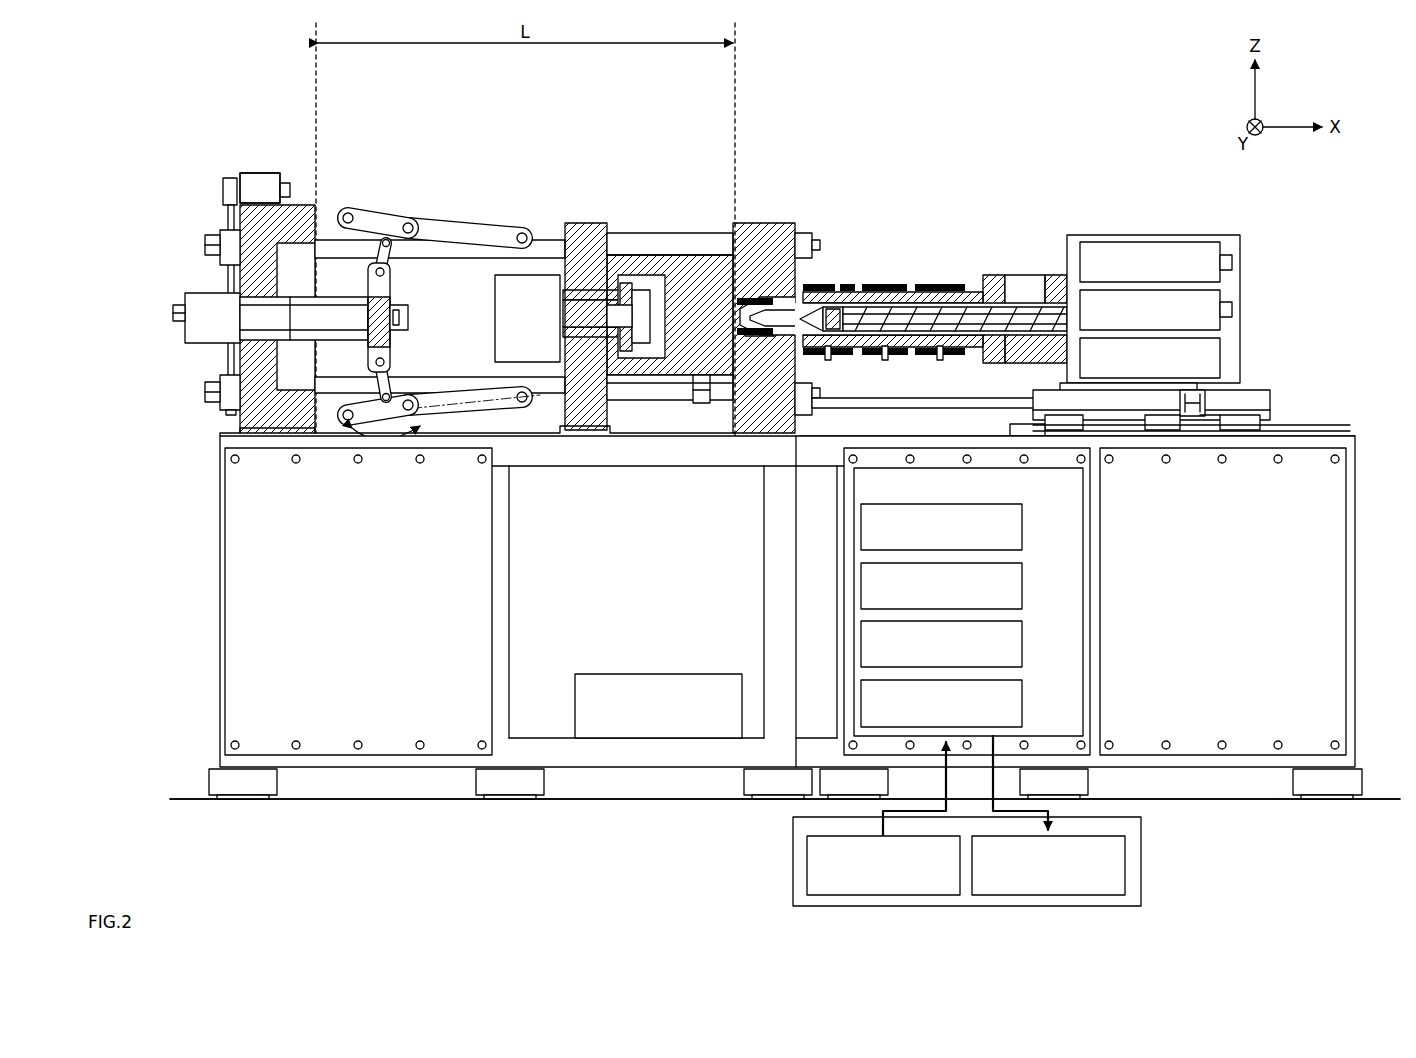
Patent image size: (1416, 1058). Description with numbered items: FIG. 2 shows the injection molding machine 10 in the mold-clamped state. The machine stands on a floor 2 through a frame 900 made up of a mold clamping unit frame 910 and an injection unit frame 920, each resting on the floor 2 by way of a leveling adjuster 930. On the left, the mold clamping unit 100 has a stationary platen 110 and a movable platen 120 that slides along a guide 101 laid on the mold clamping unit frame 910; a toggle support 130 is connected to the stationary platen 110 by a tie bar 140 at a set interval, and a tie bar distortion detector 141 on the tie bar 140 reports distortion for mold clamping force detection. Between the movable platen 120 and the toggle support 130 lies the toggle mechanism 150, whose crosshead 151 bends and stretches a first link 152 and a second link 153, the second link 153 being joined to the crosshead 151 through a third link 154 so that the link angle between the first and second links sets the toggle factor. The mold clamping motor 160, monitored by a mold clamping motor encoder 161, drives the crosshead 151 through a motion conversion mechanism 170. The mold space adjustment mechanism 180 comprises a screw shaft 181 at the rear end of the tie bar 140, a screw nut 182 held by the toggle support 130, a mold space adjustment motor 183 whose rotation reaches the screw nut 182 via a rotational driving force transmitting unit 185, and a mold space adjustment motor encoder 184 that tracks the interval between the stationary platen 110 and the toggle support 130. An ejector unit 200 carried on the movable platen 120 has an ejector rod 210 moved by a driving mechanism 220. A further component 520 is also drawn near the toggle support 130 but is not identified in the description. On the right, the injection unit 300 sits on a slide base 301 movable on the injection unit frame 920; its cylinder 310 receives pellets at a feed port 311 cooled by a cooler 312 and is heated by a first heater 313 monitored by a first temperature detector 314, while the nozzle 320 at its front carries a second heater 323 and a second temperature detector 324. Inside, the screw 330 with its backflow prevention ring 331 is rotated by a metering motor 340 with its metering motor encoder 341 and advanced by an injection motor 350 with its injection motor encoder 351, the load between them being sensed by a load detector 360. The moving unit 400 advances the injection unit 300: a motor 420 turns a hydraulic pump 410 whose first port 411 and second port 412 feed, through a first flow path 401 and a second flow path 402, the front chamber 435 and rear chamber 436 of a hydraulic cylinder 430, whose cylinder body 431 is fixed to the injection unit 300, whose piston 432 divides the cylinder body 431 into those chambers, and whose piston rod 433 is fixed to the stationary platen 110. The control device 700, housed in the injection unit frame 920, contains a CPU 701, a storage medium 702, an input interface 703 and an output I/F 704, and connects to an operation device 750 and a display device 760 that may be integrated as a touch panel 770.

The floor 2 is at (1380, 797).
The injection molding machine 10 is at (131, 37).
The mold clamping unit 100 is at (812, 188).
The guide 101 is at (630, 426).
The stationary platen 110 is at (758, 225).
The movable platen 120 is at (590, 222).
The toggle support 130 is at (250, 375).
The tie bar 140 is at (700, 385).
The tie bar distortion detector 141 is at (703, 392).
The toggle mechanism 150 is at (340, 142).
The crosshead 151 is at (378, 262).
The first link 152 is at (470, 385).
The second link 153 is at (412, 398).
The third link 154 is at (384, 390).
The mold clamping motor 160 is at (185, 330).
The mold clamping motor encoder 161 is at (175, 312).
The motion conversion mechanism 170 is at (288, 296).
The mold space adjustment mechanism 180 is at (166, 148).
The screw shaft 181 is at (215, 245).
The screw nut 182 is at (220, 206).
The mold space adjustment motor 183 is at (250, 173).
The mold space adjustment motor encoder 184 is at (262, 172).
The rotational driving force transmitting unit 185 is at (228, 195).
The ejector unit 200 is at (520, 172).
The ejector rod 210 is at (590, 288).
The driving mechanism 220 is at (530, 274).
The injection unit 300 is at (1232, 198).
The slide base 301 is at (1250, 384).
The cylinder 310 is at (858, 302).
The feed port 311 is at (1025, 274).
The cooler 312 is at (993, 274).
The first heater 313 is at (942, 283).
The first temperature detector 314 is at (944, 358).
The nozzle 320 is at (800, 296).
The second heater 323 is at (752, 340).
The second temperature detector 324 is at (768, 340).
The screw 330 is at (898, 306).
The backflow prevention ring 331 is at (835, 306).
The metering motor 340 is at (1185, 240).
The metering motor encoder 341 is at (1232, 255).
The injection motor 350 is at (1220, 290).
The injection motor encoder 351 is at (1232, 310).
The load detector 360 is at (1220, 360).
The moving unit 400 is at (858, 396).
The first flow path 401 is at (1050, 390).
The second flow path 402 is at (1200, 420).
The hydraulic pump 410 is at (1164, 420).
The first port 411 is at (1210, 400).
The second port 412 is at (1182, 420).
The motor 420 is at (1345, 440).
The hydraulic cylinder 430 is at (1286, 850).
The cylinder body 431 is at (1240, 430).
The piston 432 is at (1160, 430).
The piston rod 433 is at (1060, 430).
The front chamber 435 is at (1012, 425).
The rear chamber 436 is at (1219, 420).
The position sensor 520 is at (291, 352).
The control device 700 is at (935, 466).
The CPU 701 is at (1027, 528).
The storage medium 702 is at (1027, 587).
The input interface 703 is at (1027, 645).
The output I/F 704 is at (1027, 704).
The operation device 750 is at (881, 895).
The display device 760 is at (1046, 895).
The touch panel 770 is at (793, 866).
The frame 900 is at (205, 450).
The mold clamping unit frame 910 is at (205, 596).
The injection unit frame 920 is at (1358, 683).
The leveling adjuster 930 is at (1326, 784).